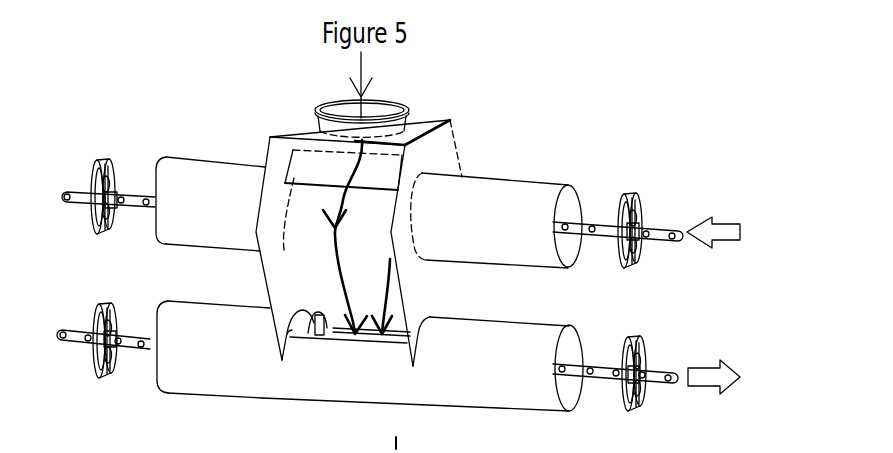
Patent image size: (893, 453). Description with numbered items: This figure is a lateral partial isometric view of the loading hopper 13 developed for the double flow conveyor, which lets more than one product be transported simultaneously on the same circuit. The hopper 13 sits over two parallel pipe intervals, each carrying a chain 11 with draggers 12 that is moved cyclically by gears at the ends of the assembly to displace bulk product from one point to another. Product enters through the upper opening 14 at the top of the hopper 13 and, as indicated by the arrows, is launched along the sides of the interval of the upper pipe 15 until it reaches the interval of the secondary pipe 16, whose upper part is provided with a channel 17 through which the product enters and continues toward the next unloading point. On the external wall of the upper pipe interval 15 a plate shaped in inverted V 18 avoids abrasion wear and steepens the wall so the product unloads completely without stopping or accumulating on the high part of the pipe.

The chain 11 is at (608, 378).
The draggers 12 is at (648, 343).
The loading hopper 13 is at (302, 128).
The upper opening 14 is at (400, 127).
The top tube opening 15 is at (197, 217).
The secondary pipe 16 is at (198, 364).
The channel 17 is at (402, 340).
The plate shaped in V inverted 18 is at (297, 173).